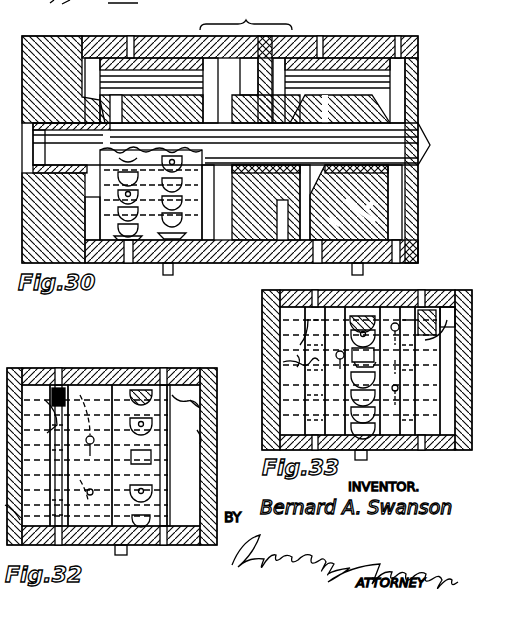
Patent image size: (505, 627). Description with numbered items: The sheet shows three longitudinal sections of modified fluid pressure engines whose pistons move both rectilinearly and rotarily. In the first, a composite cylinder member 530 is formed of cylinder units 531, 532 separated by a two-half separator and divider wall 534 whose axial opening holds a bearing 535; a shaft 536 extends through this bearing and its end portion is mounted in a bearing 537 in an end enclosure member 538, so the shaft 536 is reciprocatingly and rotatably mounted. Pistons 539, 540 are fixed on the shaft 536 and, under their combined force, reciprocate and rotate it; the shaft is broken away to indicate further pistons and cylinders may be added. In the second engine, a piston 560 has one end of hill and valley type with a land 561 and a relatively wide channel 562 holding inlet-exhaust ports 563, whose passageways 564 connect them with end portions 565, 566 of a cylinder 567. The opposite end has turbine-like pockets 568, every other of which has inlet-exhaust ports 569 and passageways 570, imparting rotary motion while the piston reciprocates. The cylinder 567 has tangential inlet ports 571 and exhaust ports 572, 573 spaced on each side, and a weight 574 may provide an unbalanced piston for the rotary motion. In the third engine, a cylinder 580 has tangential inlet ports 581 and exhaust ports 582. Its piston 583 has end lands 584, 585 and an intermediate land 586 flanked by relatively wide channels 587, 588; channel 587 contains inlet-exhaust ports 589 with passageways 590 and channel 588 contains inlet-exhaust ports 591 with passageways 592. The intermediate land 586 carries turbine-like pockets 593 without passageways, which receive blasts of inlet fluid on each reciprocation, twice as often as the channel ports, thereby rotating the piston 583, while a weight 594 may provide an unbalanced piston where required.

In FIG. 30, the composite cylinder member 530 is at (246, 17).
In FIG. 30, the cylinder unit 531 is at (106, 36).
In FIG. 30, the cylinder unit 532 is at (388, 36).
In FIG. 30, the separator and divider wall 534 is at (250, 83).
In FIG. 30, the bearing 535 is at (241, 78).
In FIG. 30, the shaft 536 is at (50, 120).
In FIG. 30, the bearing 537 is at (63, 138).
In FIG. 30, the end enclosure member 538 is at (32, 36).
In FIG. 30, the piston 539 is at (186, 262).
In FIG. 30, the piston 540 is at (337, 194).
In FIG. 32, the piston 560 is at (205, 368).
In FIG. 32, the land 561 is at (41, 416).
In FIG. 32, the channel 562 is at (80, 388).
In FIG. 32, the inlet-exhaust ports 563 is at (90, 455).
In FIG. 32, the passageways 564 is at (141, 456).
In FIG. 32, the end portion of cylinder 565 is at (18, 503).
In FIG. 32, the end portion of cylinder 566 is at (200, 400).
In FIG. 32, the cylinder 567 is at (170, 388).
In FIG. 32, the turbine-like pockets 568 is at (217, 450).
In FIG. 32, the inlet-exhaust ports 569 is at (145, 525).
In FIG. 32, the passageways 570 is at (53, 420).
In FIG. 32, the tangential inlet ports 571 is at (123, 368).
In FIG. 32, the exhaust ports 572 is at (58, 367).
In FIG. 32, the exhaust ports 573 is at (163, 368).
In FIG. 32, the weight 574 is at (32, 369).
In FIG. 33, the cylinder 580 is at (443, 452).
In FIG. 33, the tangential inlet ports 581 is at (376, 284).
In FIG. 33, the exhaust ports 582 is at (308, 290).
In FIG. 33, the piston 583 is at (297, 357).
In FIG. 33, the end land 584 is at (300, 345).
In FIG. 33, the end land 585 is at (452, 297).
In FIG. 33, the intermediate land 586 is at (349, 294).
In FIG. 33, the channel 587 is at (304, 371).
In FIG. 33, the channel 588 is at (437, 371).
In FIG. 33, the inlet-exhaust ports 589 is at (342, 394).
In FIG. 33, the passageways 590 is at (400, 371).
In FIG. 33, the inlet-exhaust ports 591 is at (395, 371).
In FIG. 33, the passageways 592 is at (282, 322).
In FIG. 33, the turbine-like pockets 593 is at (354, 373).
In FIG. 33, the weight 594 is at (436, 302).